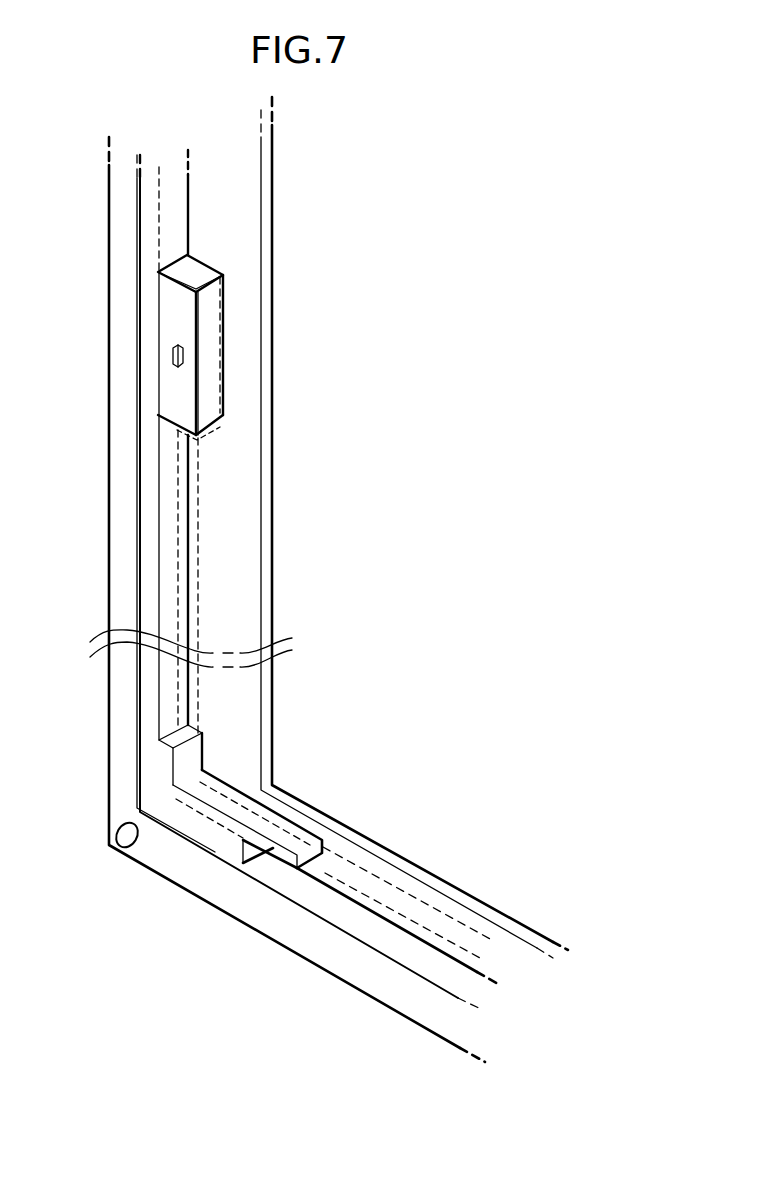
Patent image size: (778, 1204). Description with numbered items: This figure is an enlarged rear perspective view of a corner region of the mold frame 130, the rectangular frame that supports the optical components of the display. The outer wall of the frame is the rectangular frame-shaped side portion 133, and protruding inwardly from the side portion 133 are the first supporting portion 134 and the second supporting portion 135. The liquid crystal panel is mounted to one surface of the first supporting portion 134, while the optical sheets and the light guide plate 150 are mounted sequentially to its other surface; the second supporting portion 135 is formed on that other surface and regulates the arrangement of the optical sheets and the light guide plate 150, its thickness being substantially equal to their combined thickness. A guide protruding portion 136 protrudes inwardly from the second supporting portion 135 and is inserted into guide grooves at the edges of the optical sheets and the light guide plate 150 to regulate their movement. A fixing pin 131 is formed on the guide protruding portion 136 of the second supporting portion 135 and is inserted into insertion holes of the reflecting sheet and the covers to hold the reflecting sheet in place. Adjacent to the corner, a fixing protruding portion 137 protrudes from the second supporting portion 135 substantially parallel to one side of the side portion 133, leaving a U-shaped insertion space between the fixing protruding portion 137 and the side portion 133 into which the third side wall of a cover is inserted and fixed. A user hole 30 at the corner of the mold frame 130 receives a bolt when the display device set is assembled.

The mold frame 130 is at (421, 534).
The fixing pin 131 is at (170, 353).
The side portion 133 is at (123, 750).
The first supporting portion 134 is at (247, 397).
The second supporting portion 135 is at (150, 530).
The guide protruding portion 136 is at (207, 345).
The fixing protruding portion 137 is at (298, 840).
The light guide plate 150 is at (177, 690).
The user hole 30 is at (127, 835).